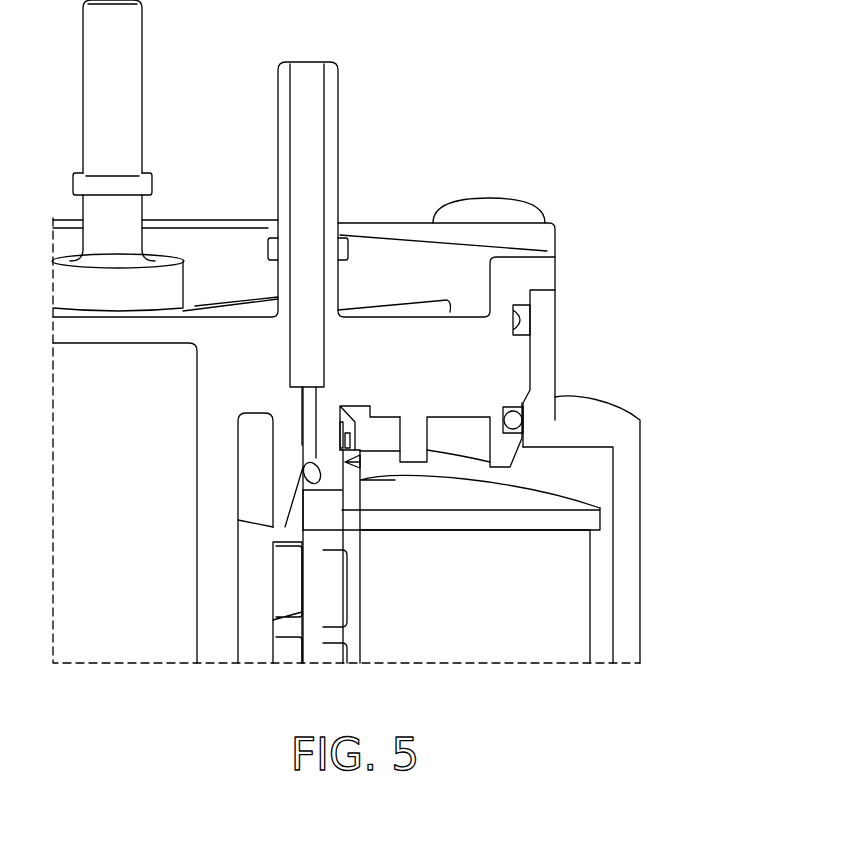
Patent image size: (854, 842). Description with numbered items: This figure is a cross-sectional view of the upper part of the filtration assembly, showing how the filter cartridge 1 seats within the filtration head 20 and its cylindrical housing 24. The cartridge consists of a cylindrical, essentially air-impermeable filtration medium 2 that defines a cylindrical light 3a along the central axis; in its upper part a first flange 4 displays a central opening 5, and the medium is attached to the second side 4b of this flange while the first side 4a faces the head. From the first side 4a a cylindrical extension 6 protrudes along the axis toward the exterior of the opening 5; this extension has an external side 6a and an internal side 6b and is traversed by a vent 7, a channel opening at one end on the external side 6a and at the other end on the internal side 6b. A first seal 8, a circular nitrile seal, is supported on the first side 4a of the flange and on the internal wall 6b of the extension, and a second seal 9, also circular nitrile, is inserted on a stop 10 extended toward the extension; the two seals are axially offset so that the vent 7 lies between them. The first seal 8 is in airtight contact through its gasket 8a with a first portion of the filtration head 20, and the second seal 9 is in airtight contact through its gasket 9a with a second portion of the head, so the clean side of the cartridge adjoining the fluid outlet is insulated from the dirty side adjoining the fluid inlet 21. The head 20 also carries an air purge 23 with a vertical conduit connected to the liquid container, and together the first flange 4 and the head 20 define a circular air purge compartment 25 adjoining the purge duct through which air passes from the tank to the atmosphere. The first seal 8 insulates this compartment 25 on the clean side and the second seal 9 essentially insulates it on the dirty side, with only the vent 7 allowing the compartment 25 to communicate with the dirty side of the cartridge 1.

The filter cartridge 1 is at (588, 602).
The filtration medium 2 is at (473, 640).
The cylindrical light 3a is at (285, 588).
The first flange 4 is at (550, 517).
The first side 4a is at (580, 450).
The second side 4b is at (452, 533).
The opening 5 is at (273, 527).
The cylindrical extension 6 is at (352, 500).
The external side 6a is at (362, 472).
The internal side 6b is at (305, 495).
The vent 7 is at (365, 455).
The first seal 8 is at (317, 502).
The gasket 8a is at (303, 465).
The second seal 9 is at (342, 443).
The gasket 9a is at (341, 407).
The stop 10 is at (338, 447).
The filtration head 20 is at (540, 275).
The inlet 21 is at (130, 52).
The air purge 23 is at (317, 95).
The cylindrical housing 24 is at (628, 477).
The air purge compartment 25 is at (343, 455).